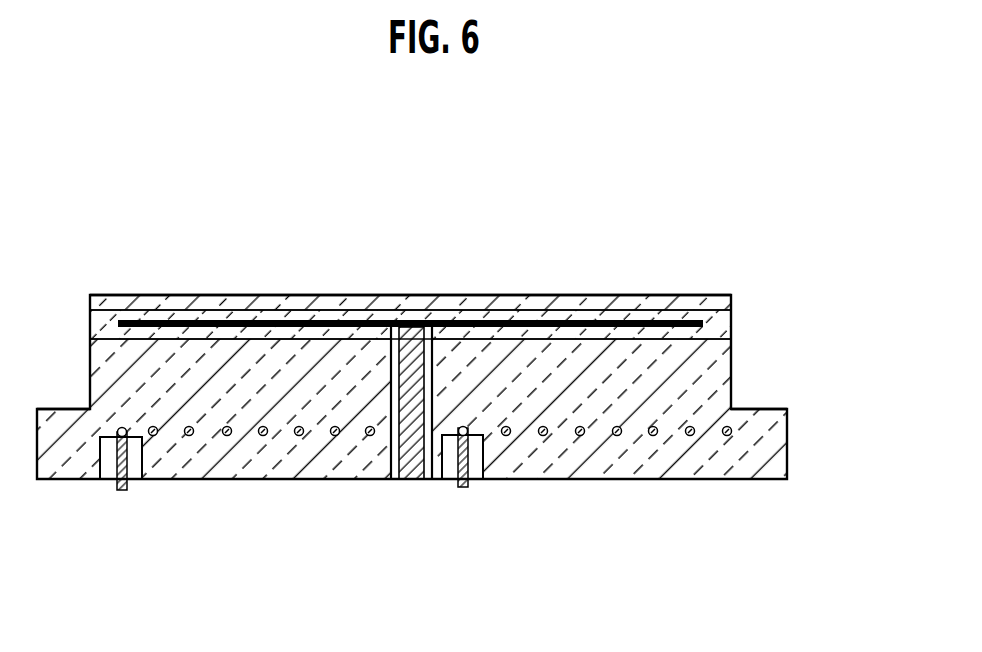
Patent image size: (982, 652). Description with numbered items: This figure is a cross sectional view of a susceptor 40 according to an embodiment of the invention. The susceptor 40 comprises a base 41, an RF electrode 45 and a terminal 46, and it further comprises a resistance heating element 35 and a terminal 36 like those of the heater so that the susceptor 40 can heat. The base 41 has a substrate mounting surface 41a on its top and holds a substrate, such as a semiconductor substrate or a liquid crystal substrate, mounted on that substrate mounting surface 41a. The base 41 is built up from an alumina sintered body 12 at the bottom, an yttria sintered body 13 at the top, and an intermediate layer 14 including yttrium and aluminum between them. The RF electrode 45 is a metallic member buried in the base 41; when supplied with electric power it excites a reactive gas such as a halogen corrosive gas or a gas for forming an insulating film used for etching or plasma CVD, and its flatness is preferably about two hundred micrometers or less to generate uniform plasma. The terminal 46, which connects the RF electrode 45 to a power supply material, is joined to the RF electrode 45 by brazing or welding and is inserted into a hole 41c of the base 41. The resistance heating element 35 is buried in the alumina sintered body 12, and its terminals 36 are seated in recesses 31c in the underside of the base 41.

The alumina sintered body 12 is at (787, 436).
The yttria sintered body 13 is at (713, 295).
The intermediate layer 14 is at (705, 323).
The resistance heating element 35 is at (510, 434).
The terminal 36 is at (122, 492).
The screw recess 31c is at (140, 480).
The susceptor 40 is at (611, 238).
The base 41 is at (850, 255).
The substrate mounting surface 41a is at (487, 292).
The hole 41c is at (395, 480).
The RF electrode 45 is at (342, 320).
The terminal 46 is at (403, 480).